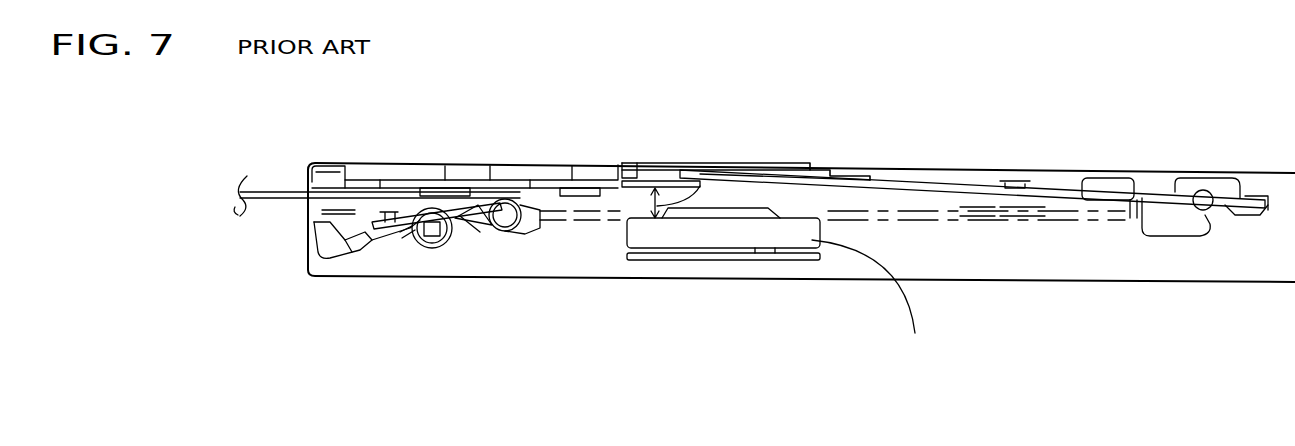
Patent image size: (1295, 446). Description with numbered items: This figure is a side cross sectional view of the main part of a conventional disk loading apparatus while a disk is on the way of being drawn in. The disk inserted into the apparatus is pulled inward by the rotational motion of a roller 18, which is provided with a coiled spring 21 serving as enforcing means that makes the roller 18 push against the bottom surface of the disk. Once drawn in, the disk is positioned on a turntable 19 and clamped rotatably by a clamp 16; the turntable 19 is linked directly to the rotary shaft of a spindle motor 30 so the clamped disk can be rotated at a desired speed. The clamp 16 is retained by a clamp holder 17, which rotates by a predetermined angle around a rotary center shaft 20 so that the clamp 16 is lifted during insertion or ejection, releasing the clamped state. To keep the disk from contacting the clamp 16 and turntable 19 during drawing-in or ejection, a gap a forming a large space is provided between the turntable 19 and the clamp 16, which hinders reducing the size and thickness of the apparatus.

The clamp 16 is at (648, 178).
The clamp holder 17 is at (905, 183).
The roller 18 is at (508, 231).
The turntable 19 is at (737, 227).
The rotary center shaft 20 is at (1208, 192).
The coiled spring 21 is at (440, 250).
The spindle motor 30 is at (870, 309).
The gap a is at (704, 172).